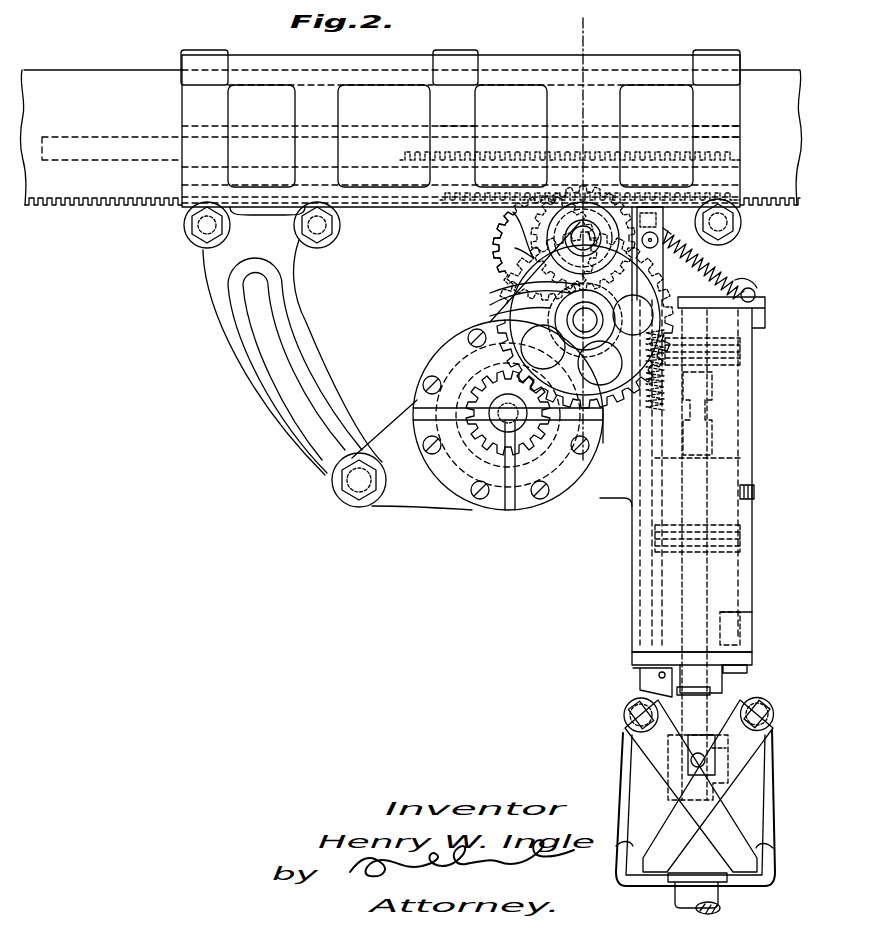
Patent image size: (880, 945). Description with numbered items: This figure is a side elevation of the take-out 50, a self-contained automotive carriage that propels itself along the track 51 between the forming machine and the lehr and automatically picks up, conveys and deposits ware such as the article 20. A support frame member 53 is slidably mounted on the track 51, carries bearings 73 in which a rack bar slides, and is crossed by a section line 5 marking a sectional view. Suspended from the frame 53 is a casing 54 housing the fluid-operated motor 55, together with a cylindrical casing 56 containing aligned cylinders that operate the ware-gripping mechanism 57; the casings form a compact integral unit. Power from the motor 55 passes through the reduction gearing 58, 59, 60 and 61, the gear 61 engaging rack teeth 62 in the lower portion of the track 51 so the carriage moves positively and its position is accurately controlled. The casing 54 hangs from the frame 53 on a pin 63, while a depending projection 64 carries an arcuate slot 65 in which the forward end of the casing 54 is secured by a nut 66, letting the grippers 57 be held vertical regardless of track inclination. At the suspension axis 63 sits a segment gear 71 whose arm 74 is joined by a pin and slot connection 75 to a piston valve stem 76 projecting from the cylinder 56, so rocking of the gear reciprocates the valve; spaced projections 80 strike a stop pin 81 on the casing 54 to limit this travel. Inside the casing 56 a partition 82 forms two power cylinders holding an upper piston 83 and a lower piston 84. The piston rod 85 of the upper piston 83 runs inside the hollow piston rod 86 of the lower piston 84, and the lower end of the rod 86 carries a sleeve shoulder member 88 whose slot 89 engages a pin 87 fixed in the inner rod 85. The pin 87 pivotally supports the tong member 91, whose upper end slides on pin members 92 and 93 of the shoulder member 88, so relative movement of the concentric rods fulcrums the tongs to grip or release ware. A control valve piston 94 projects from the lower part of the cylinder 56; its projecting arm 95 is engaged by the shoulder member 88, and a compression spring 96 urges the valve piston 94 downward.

The section line 5 is at (592, 31).
The article 20 is at (722, 902).
The take-out 50 is at (550, 575).
The track 51 is at (100, 72).
The support frame member 53 is at (430, 50).
The casing 54 is at (405, 502).
The motor 55 is at (485, 502).
The cylindrical casing 56 is at (752, 583).
The ware-gripping mechanism 57 is at (627, 782).
The reduction gear 58 is at (486, 392).
The reduction gear 59 is at (510, 305).
The reduction gear 60 is at (500, 310).
The gear 61 is at (566, 240).
The rack teeth 62 is at (138, 206).
The pin 63 is at (510, 262).
The depending projection 64 is at (222, 333).
The arcuate slot 65 is at (268, 355).
The nut 66 is at (345, 502).
The segment gear 71 is at (510, 236).
The bearings 73 is at (750, 110).
The arm 74 is at (640, 203).
The pin and slot connection 75 is at (652, 205).
The piston valve stem 76 is at (712, 260).
The spaced projections 80 is at (528, 300).
The stop pin 81 is at (528, 282).
The partition 82 is at (735, 468).
The upper piston 83 is at (740, 357).
The lower piston 84 is at (740, 540).
The piston rod 85 is at (712, 432).
The hollow piston rod 86 is at (752, 618).
The pin 87 is at (702, 763).
The sleeve shoulder member 88 is at (697, 730).
The slot 89 is at (707, 747).
The tong member 91 is at (792, 863).
The pin member 92 is at (773, 702).
The pin member 93 is at (627, 707).
The control valve piston 94 is at (640, 618).
The projecting arm 95 is at (633, 678).
The compression spring 96 is at (663, 398).